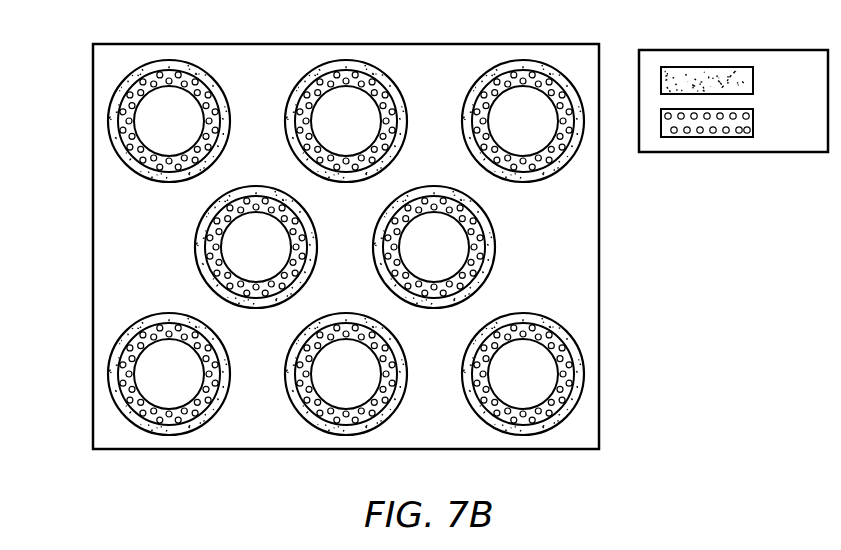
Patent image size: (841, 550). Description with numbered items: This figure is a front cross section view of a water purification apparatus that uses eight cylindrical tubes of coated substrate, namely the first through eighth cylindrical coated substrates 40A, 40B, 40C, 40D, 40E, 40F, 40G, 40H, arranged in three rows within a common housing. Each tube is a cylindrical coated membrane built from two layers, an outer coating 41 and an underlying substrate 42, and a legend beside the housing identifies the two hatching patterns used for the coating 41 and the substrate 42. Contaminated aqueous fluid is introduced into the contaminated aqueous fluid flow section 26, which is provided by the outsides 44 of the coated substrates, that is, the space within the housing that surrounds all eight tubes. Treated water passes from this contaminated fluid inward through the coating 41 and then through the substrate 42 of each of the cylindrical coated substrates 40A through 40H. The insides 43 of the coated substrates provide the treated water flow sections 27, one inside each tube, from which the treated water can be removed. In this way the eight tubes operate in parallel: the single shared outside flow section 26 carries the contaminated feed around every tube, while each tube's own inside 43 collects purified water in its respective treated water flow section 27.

The first cylindrical coated substrate 40A is at (58, 192).
The second cylindrical coated substrate 40B is at (242, 22).
The third cylindrical coated substrate 40C is at (415, 22).
The fourth cylindrical coated substrate 40D is at (66, 262).
The fifth cylindrical coated substrate 40E is at (620, 271).
The sixth cylindrical coated substrate 40F is at (52, 320).
The seventh cylindrical coated substrate 40G is at (212, 472).
The eighth cylindrical coated substrate 40H is at (408, 472).
The coating 41 is at (734, 80).
The substrate 42 is at (734, 123).
The insides 43 is at (338, 249).
The treated water flow section 27 is at (338, 249).
The outsides 44 is at (346, 246).
The contaminated aqueous fluid flow section 26 is at (520, 260).